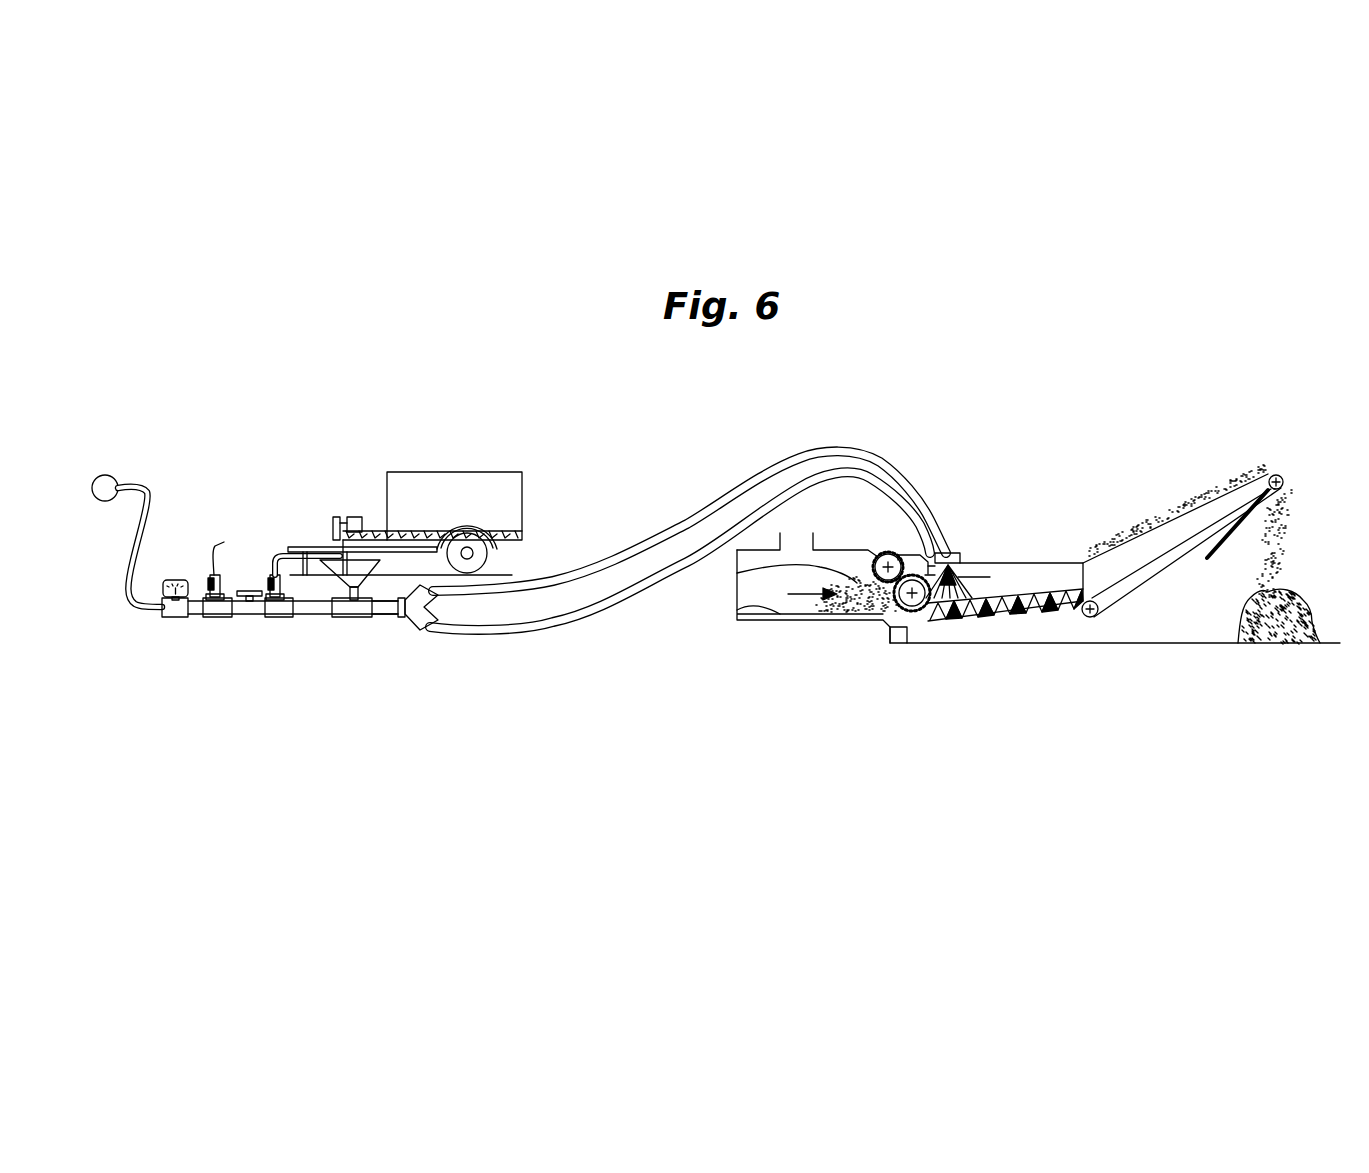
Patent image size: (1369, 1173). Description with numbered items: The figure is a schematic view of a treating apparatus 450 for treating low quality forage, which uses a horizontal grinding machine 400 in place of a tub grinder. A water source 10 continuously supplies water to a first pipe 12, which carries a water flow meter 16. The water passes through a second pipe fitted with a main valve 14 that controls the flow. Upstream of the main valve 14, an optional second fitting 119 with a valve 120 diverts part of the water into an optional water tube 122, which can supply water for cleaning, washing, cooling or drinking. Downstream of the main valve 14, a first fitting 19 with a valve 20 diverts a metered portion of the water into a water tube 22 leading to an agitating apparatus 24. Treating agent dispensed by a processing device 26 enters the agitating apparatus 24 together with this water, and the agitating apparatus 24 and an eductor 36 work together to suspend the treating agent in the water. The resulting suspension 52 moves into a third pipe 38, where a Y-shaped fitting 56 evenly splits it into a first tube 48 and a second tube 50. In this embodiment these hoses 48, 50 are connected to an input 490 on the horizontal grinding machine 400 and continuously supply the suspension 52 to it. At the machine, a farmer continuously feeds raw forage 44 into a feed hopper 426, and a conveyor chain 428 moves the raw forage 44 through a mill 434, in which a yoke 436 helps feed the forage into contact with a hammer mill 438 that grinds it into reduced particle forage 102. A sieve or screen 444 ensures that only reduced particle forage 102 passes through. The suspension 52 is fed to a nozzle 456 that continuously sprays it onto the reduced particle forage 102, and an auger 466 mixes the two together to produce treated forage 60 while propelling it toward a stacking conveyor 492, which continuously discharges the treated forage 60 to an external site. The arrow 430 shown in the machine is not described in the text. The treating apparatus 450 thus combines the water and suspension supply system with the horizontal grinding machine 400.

The water source 10 is at (111, 478).
The first pipe 12 is at (130, 602).
The water flow meter 16 is at (160, 582).
The valve 120 is at (210, 578).
The optional water tube 122 is at (212, 551).
The optional second fitting 119 is at (215, 610).
The main valve 14 is at (259, 591).
The first fitting 19 is at (276, 610).
The valve 20 is at (272, 577).
The water tube 22 is at (284, 556).
The agitating apparatus 24 is at (347, 580).
The eductor 36 is at (348, 612).
The third pipe 38 is at (386, 608).
The fitting 56 is at (418, 622).
The processing device 26 is at (454, 472).
The first tube 48 is at (627, 590).
The second tube 50 is at (552, 583).
The feed hopper 426 is at (797, 540).
The raw forage 44 is at (737, 575).
The conveyor chain 428 is at (737, 612).
The flow direction arrow 430 is at (795, 598).
The reduced particle forage 102 is at (927, 618).
The yoke 436 is at (881, 553).
The mill 434 is at (907, 573).
The hammer mill 438 is at (911, 555).
The sieve or screen 444 is at (933, 552).
The input 490 is at (950, 556).
The nozzle 456 is at (960, 573).
The suspension 52 is at (990, 577).
The auger 466 is at (1020, 596).
The stacking conveyor 492 is at (1145, 562).
The horizontal grinding machine 400 is at (1022, 489).
The treated forage 60 is at (1296, 597).
The treating apparatus 450 is at (754, 376).